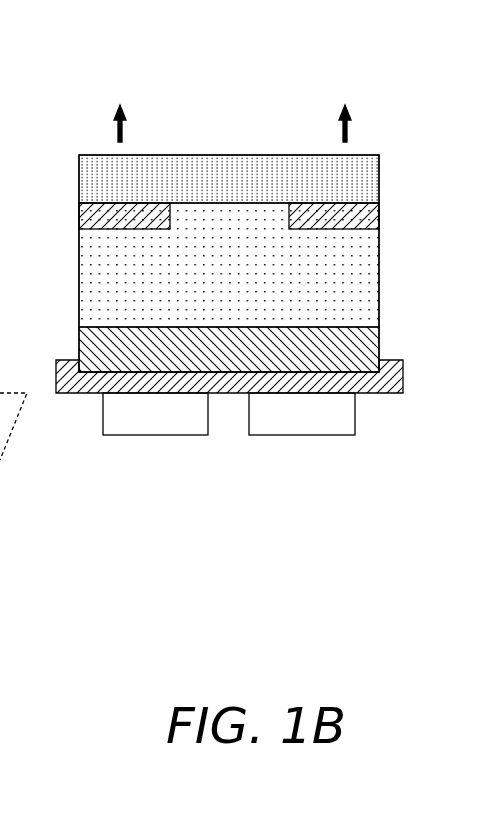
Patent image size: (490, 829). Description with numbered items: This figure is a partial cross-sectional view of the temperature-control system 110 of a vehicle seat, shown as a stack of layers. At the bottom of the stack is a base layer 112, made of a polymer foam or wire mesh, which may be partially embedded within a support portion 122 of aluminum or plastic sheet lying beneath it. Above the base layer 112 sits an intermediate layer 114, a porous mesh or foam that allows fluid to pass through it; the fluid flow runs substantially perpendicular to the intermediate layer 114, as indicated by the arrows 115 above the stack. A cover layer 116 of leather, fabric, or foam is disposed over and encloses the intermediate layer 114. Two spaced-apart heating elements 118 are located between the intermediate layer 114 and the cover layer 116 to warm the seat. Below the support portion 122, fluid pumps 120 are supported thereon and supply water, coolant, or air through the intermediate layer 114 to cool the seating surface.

The temperature-control system 110 is at (318, 92).
The base layer 112 is at (372, 347).
The intermediate layer 114 is at (370, 262).
The arrows 115 is at (127, 128).
The cover layer 116 is at (379, 175).
The heating elements 118 is at (90, 212).
The fluid pumps 120 is at (166, 428).
The support portion 122 is at (401, 375).